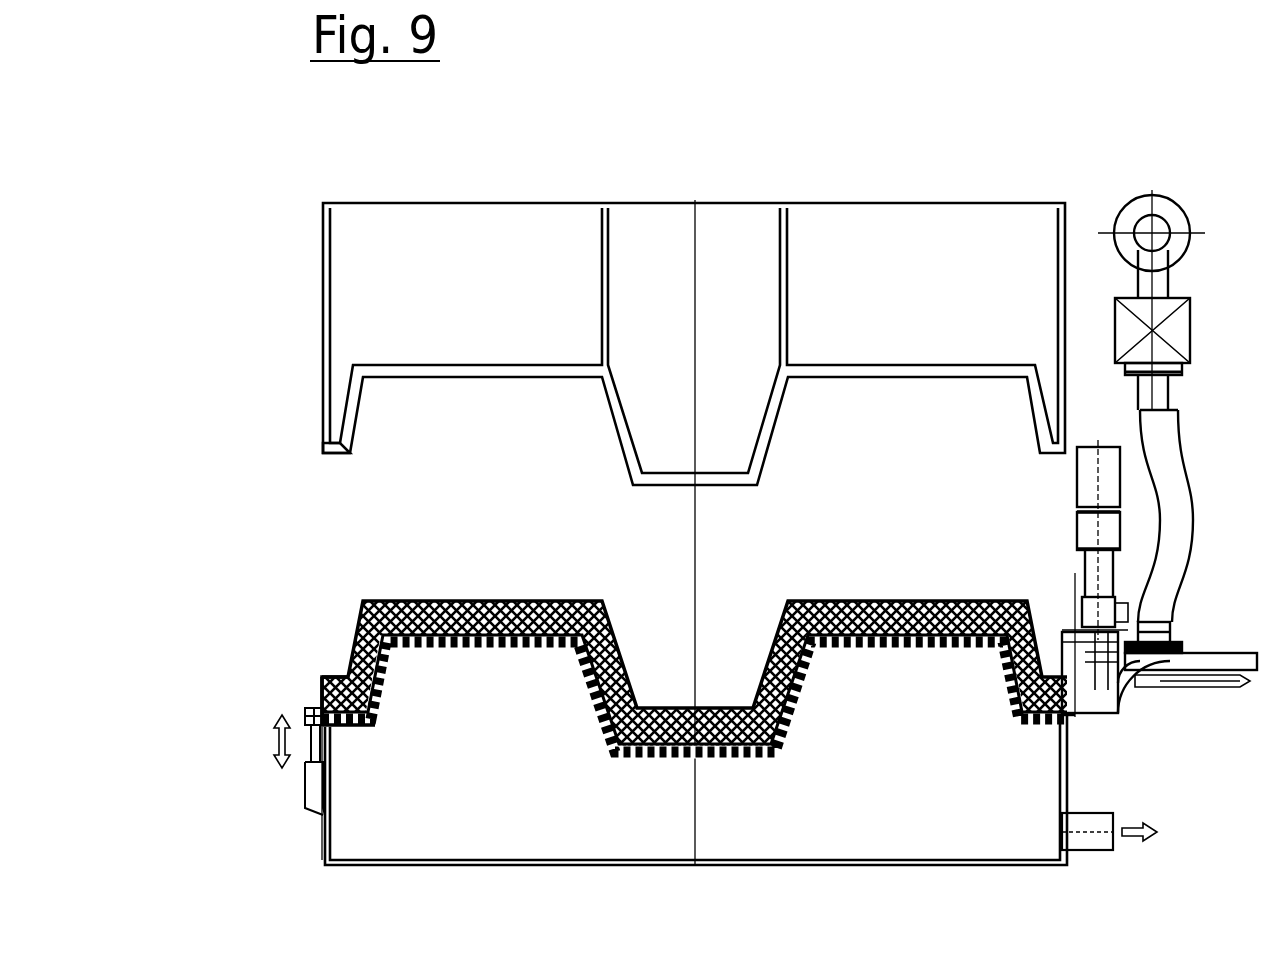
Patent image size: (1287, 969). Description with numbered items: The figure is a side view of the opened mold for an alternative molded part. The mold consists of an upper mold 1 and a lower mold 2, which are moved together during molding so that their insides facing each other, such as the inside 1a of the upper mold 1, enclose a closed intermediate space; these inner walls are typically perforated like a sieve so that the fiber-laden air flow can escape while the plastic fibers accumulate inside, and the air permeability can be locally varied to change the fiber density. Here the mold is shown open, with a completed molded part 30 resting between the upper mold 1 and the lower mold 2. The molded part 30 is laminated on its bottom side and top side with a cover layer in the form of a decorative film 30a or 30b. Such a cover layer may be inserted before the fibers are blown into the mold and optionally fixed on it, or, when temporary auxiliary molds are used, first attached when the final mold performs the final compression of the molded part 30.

The upper mold 1 is at (337, 310).
The inside of the upper mold 1a is at (351, 452).
The lower mold 2 is at (352, 828).
The molded part 30 is at (432, 600).
The decorative film 30a is at (354, 633).
The decorative film 30b is at (320, 698).